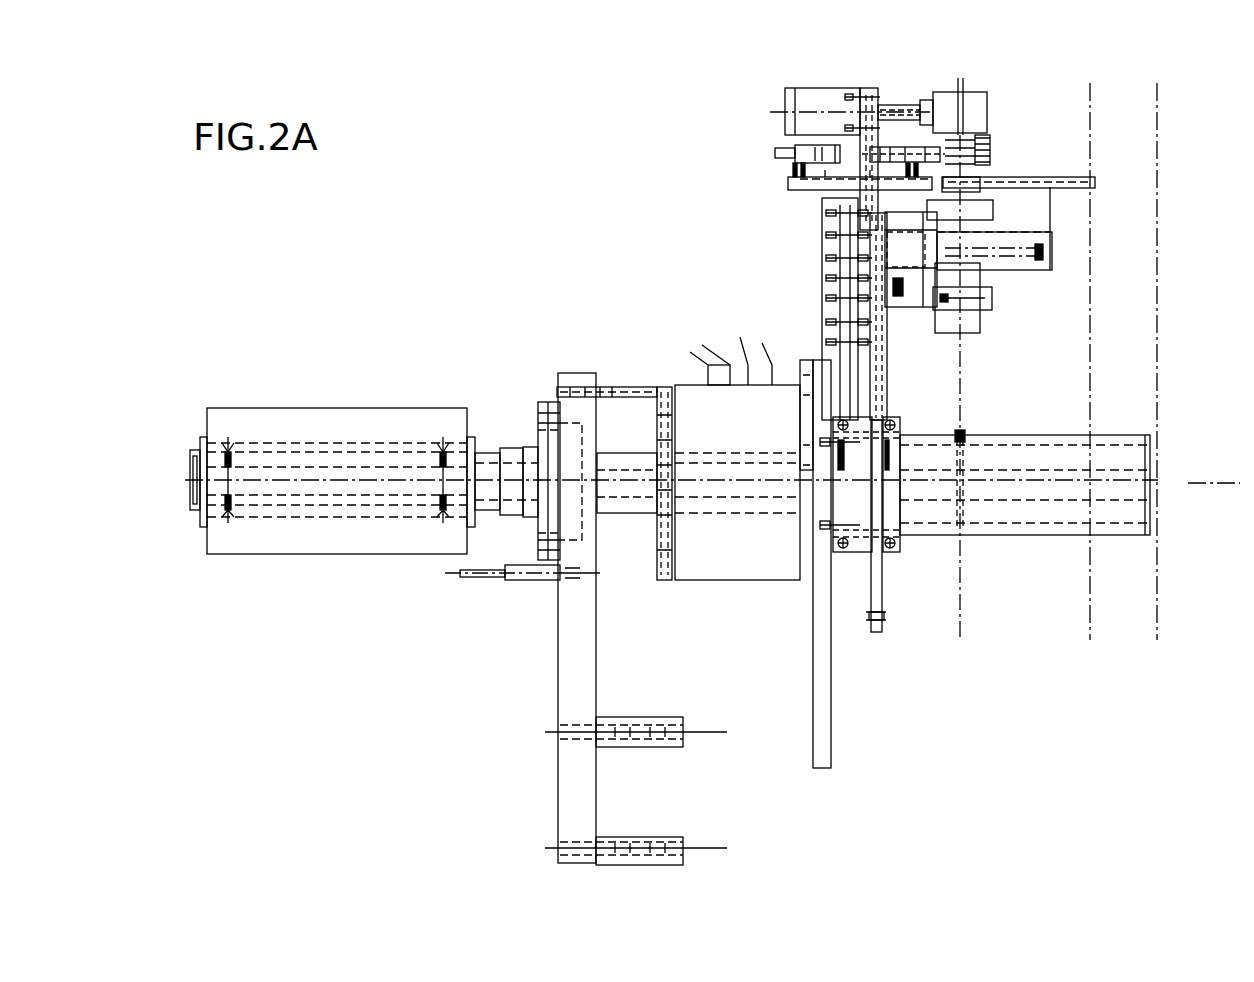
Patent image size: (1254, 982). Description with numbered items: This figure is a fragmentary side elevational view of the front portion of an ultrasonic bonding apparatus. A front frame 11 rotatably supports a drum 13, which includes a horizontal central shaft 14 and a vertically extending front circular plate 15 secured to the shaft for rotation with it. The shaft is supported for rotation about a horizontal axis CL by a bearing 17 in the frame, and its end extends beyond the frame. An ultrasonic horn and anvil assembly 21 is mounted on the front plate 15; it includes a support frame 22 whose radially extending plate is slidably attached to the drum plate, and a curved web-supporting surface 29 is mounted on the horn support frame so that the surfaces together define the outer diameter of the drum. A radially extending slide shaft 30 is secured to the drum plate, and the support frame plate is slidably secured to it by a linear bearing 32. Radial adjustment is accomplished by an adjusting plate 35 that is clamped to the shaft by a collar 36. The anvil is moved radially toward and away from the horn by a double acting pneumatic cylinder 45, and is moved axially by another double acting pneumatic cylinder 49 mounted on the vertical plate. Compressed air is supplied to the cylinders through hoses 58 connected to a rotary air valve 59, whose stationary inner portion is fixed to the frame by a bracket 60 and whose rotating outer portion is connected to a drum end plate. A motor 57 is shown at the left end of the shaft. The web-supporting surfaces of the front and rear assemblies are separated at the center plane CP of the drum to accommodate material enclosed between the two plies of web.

The front frame 11 is at (558, 668).
The drum 13 is at (815, 647).
The horizontal central shaft 14 is at (1128, 432).
The front circular plate 15 is at (818, 268).
The bearing 17 is at (568, 543).
The ultrasonic horn and anvil assembly 21 is at (1025, 128).
The support frame 22 is at (788, 183).
The curved web-supporting surface 29 is at (1068, 178).
The slide shaft 30 is at (833, 205).
The linear bearing 32 is at (837, 315).
The adjusting plate 35 is at (885, 588).
The collar 36 is at (890, 553).
The double acting pneumatic cylinder 45 is at (967, 92).
The double acting pneumatic cylinder 49 is at (828, 88).
The motor 57 is at (288, 556).
The hose 58 is at (707, 382).
The rotary air valve 59 is at (720, 581).
The bracket 60 is at (638, 392).
The center plane CP is at (1155, 326).
The horizontal axis CL is at (712, 486).